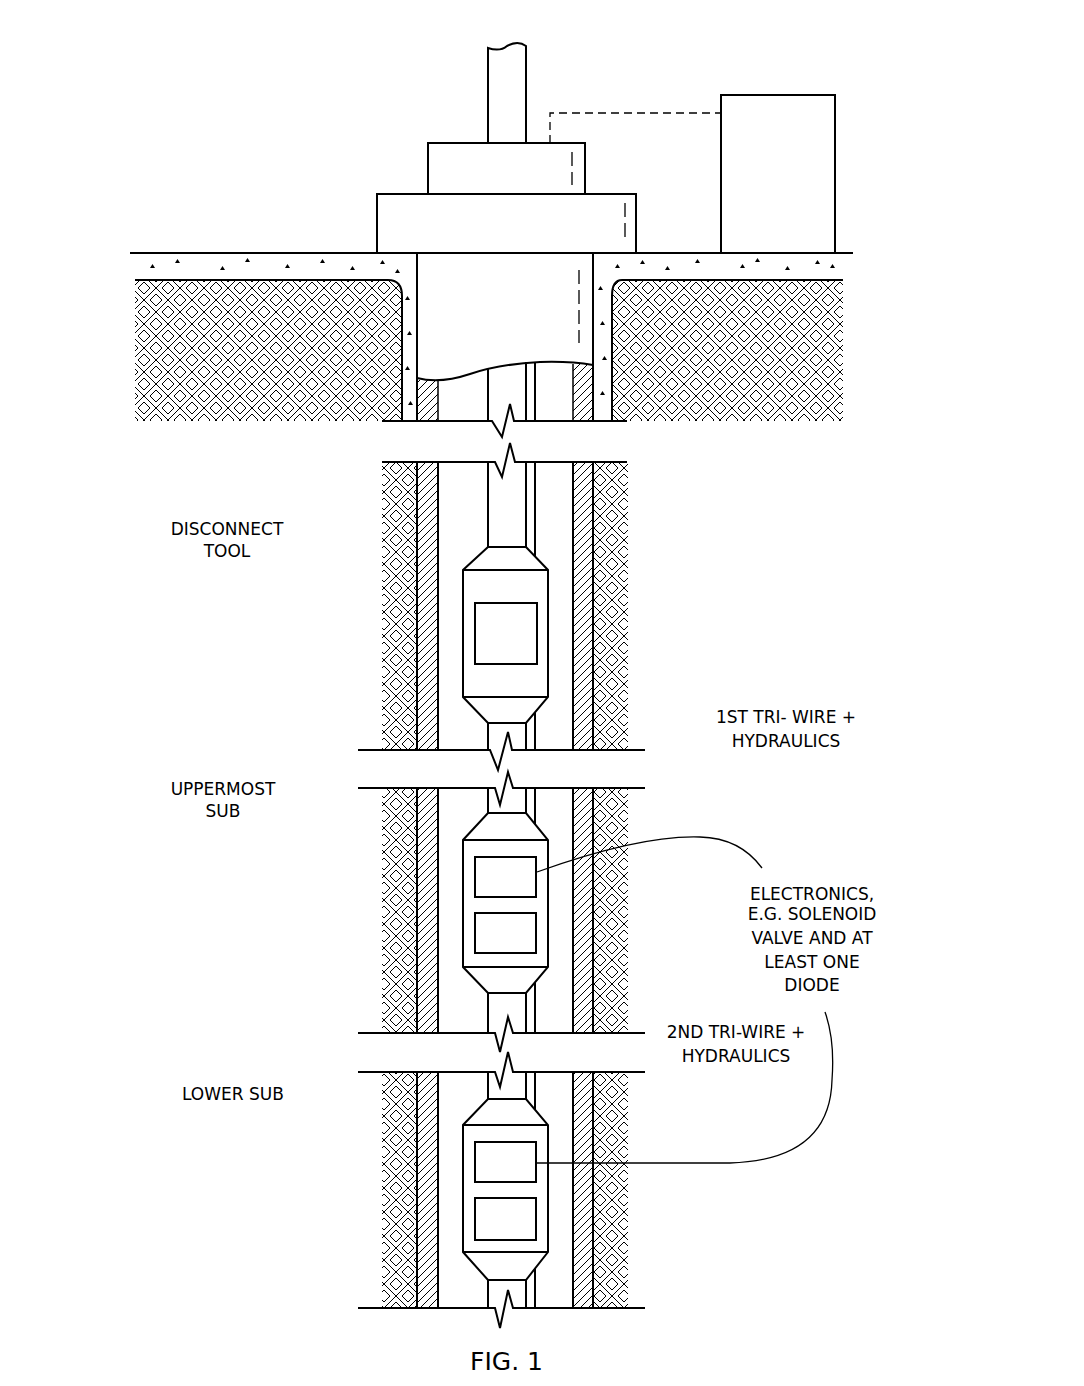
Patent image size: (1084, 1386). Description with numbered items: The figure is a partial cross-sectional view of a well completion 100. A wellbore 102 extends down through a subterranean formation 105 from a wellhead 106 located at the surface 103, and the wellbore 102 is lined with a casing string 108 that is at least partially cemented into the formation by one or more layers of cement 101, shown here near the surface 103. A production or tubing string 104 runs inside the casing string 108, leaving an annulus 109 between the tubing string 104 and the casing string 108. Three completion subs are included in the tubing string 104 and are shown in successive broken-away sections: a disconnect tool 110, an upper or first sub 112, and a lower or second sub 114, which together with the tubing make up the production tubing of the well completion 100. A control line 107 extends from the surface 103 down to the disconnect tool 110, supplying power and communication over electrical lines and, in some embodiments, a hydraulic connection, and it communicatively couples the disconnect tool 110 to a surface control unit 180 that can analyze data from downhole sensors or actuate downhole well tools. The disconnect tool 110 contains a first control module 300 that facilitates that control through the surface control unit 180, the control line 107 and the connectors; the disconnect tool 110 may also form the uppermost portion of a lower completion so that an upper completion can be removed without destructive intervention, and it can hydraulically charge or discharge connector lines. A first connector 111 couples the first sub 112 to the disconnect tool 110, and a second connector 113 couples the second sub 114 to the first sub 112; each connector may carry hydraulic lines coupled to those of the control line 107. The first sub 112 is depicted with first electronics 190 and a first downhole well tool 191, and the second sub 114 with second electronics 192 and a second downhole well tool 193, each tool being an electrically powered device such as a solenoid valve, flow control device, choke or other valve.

The well completion 100 is at (205, 27).
The cement 101 is at (730, 265).
The wellbore 102 is at (598, 527).
The surface 103 is at (240, 250).
The tubing string 104 is at (488, 510).
The subterranean formation 105 is at (267, 389).
The wellhead 106 is at (375, 215).
The control line 107 is at (538, 398).
The casing string 108 is at (427, 403).
The annulus 109 is at (557, 642).
The disconnect tool 110 is at (427, 623).
The first connector 111 is at (537, 740).
The first sub 112 is at (427, 893).
The second connector 113 is at (538, 1008).
The second sub 114 is at (427, 1181).
The surface control unit 180 is at (796, 221).
The first electronics 190 is at (489, 890).
The first downhole well tool 191 is at (489, 946).
The second electronics 192 is at (489, 1175).
The second downhole well tool 193 is at (489, 1232).
The first control module 300 is at (489, 652).